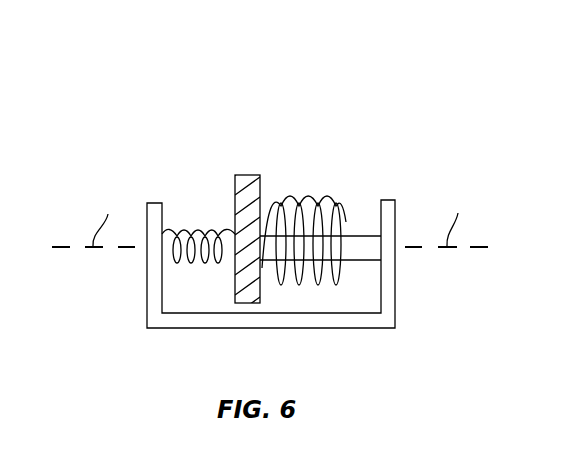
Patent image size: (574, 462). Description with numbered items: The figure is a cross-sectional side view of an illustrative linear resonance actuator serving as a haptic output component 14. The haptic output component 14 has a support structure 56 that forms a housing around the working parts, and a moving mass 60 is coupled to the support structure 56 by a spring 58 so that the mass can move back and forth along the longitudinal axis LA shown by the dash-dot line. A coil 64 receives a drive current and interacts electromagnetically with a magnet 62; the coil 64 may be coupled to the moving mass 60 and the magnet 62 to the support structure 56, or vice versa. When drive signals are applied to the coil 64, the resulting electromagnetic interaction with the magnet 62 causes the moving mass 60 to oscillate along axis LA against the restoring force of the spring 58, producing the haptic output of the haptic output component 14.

The haptic output component 14 is at (367, 163).
The support structure 56 is at (147, 291).
The spring 58 is at (196, 229).
The moving mass 60 is at (247, 175).
The magnet 62 is at (365, 262).
The coil 64 is at (302, 284).